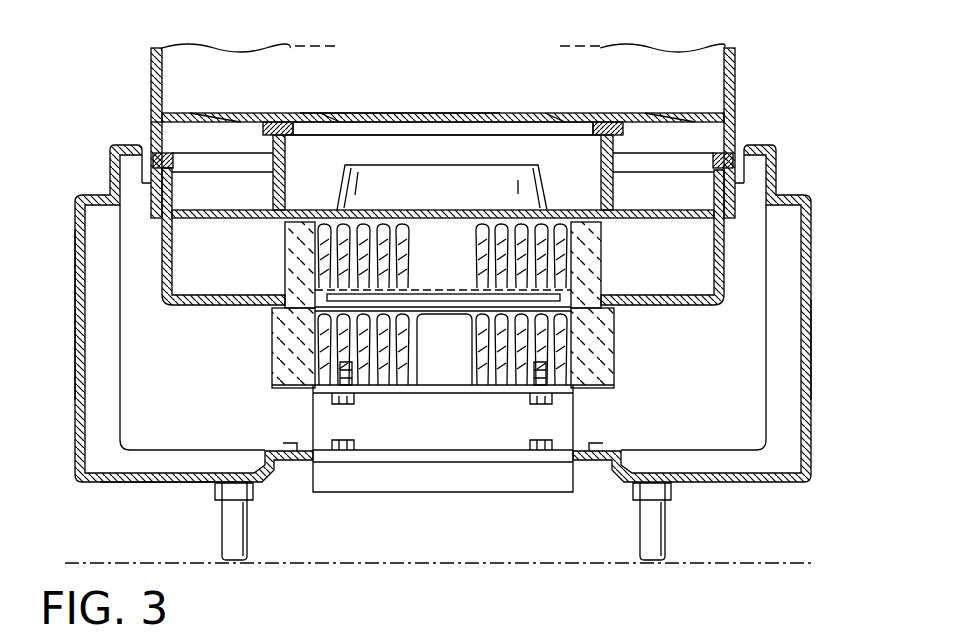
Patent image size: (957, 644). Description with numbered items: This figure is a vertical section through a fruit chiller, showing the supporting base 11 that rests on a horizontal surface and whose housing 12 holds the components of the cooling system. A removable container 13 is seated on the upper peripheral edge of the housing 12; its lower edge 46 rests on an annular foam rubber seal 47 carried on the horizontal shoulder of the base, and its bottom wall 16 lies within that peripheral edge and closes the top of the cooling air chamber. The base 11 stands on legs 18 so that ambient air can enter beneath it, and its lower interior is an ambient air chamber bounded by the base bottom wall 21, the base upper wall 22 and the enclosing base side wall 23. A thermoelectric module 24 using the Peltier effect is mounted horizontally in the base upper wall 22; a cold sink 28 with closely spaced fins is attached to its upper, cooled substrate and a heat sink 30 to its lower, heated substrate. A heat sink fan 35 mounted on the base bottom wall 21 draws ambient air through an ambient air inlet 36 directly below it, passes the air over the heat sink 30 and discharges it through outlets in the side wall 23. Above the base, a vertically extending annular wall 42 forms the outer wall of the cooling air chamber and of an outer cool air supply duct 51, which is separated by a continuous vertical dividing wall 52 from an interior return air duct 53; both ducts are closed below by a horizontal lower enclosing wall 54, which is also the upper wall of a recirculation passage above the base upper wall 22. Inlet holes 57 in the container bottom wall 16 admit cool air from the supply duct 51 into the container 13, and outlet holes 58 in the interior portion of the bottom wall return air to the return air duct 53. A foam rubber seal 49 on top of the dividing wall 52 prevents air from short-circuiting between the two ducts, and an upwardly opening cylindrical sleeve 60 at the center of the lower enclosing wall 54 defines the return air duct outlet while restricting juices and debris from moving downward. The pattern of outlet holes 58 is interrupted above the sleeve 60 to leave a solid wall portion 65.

The supporting base 11 is at (810, 248).
The housing 12 is at (75, 250).
The removable container 13 is at (736, 80).
The container bottom wall 16 is at (394, 114).
The legs 18 is at (238, 536).
The base bottom wall 21 is at (130, 482).
The base upper wall 22 is at (190, 282).
The base side wall 23 is at (811, 345).
The thermoelectric module 24 is at (437, 290).
The cold sink 28 is at (422, 224).
The heat sink 30 is at (413, 350).
The heat sink fan 35 is at (452, 440).
The ambient air inlet 36 is at (489, 472).
The annular wall 42 is at (716, 258).
The lower edge 46 is at (153, 118).
The annular foam rubber seal 47 is at (173, 162).
The annular foam rubber seal 49 is at (600, 125).
The cool air supply duct 51 is at (227, 175).
The dividing wall 52 is at (273, 206).
The return air duct 53 is at (478, 143).
The lower enclosing wall 54 is at (318, 210).
The inlet holes 57 is at (233, 117).
The outlet holes 58 is at (330, 117).
The cylindrical sleeve 60 is at (530, 185).
The solid wall portion 65 is at (440, 117).